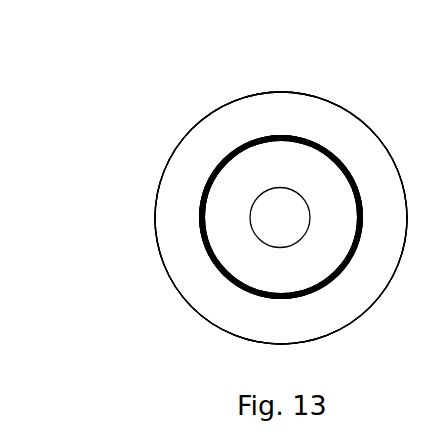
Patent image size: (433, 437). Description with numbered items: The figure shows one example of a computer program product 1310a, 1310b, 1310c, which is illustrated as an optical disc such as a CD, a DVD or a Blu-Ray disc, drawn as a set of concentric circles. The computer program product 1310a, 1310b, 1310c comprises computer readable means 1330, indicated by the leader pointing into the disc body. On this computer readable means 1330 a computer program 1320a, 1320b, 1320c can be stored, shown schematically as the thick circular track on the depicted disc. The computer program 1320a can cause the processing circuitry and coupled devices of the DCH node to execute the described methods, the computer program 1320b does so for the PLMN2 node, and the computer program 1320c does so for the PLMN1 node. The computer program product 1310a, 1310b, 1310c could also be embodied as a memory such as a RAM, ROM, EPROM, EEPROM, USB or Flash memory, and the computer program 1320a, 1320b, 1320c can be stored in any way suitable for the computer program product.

The computer program product 1310a is at (217, 182).
The computer program product 1310b is at (217, 198).
The computer program product 1310c is at (138, 132).
The computer program 1320a is at (194, 217).
The computer program 1320b is at (194, 217).
The computer program 1320c is at (200, 237).
The computer readable means 1330 is at (235, 321).